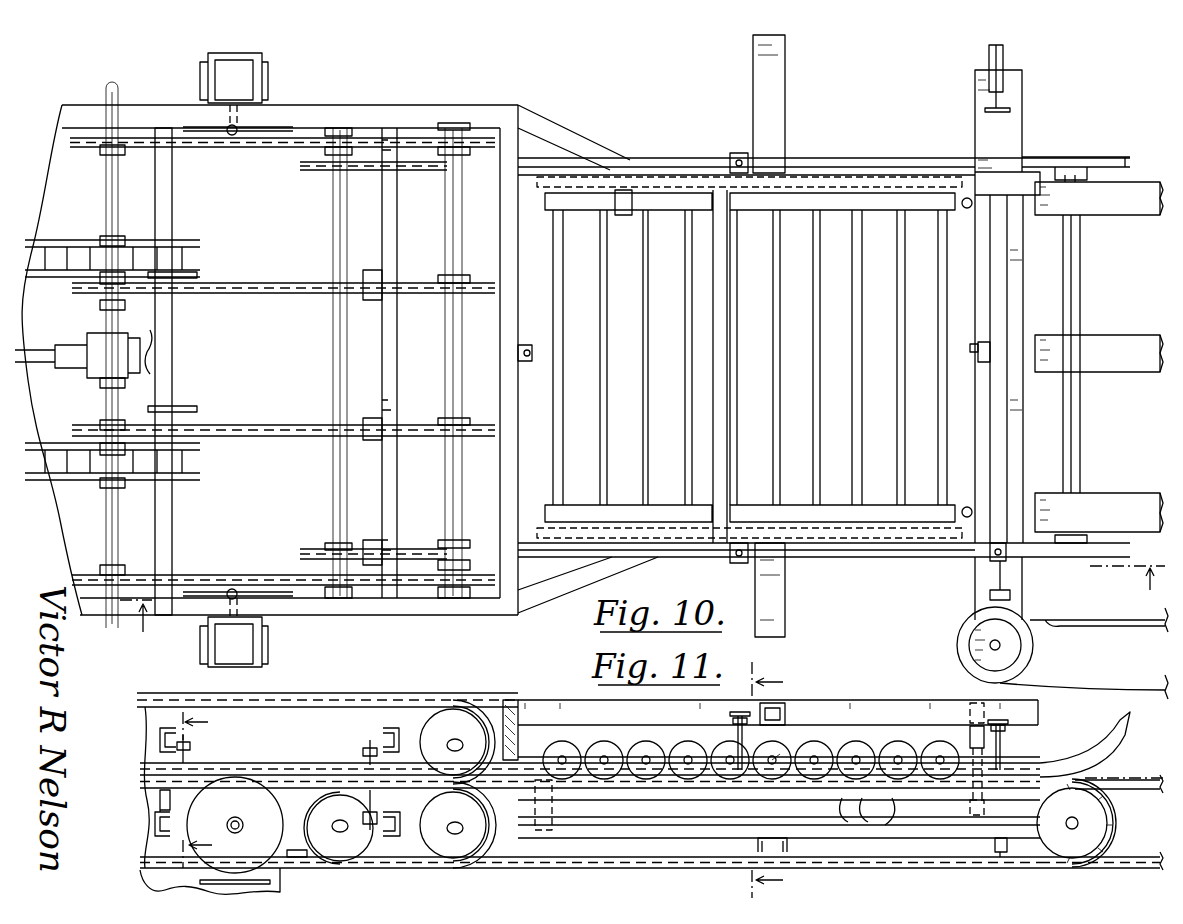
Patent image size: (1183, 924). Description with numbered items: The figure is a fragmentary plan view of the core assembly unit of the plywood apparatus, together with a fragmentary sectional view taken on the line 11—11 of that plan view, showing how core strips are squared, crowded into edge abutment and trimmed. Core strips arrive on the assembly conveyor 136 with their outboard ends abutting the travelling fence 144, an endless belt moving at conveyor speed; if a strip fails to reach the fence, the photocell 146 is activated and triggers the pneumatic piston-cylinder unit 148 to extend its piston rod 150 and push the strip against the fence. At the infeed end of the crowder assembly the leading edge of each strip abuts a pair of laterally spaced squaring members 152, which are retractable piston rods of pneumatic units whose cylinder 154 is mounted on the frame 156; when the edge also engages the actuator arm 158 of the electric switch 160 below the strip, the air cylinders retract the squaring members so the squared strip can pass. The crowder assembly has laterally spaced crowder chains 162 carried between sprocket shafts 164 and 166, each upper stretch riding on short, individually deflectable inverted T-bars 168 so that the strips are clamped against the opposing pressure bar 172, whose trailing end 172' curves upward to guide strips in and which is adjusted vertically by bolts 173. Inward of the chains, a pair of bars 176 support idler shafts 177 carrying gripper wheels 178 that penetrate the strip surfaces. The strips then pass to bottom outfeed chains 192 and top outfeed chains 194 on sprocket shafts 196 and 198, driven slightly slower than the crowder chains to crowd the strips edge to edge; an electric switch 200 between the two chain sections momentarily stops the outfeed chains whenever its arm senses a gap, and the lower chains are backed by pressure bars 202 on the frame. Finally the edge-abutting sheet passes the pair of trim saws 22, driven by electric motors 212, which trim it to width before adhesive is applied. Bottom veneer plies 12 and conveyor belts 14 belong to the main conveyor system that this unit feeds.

In FIG. 10, the section line 11— 11 is at (642, 611).
In FIG. 11, the bottom veneer plies 12 is at (786, 780).
In FIG. 11, the belts 14 is at (215, 789).
In FIG. 10, the trim saws 22 is at (283, 128).
In FIG. 11, the trim saws 22 is at (236, 782).
In FIG. 10, the assembly conveyor 136 is at (1118, 222).
In FIG. 11, the assembly conveyor 136 is at (1128, 857).
In FIG. 10, the travelling fence 144 is at (1100, 621).
In FIG. 10, the photocell 146 is at (1010, 597).
In FIG. 10, the pneumatic piston-cylinder unit 148 is at (1005, 58).
In FIG. 10, the piston rod 150 is at (1010, 100).
In FIG. 11, the squaring members 152 is at (1002, 760).
In FIG. 10, the cylinder 154 is at (966, 208).
In FIG. 11, the cylinder 154 is at (968, 738).
In FIG. 10, the frame 156 is at (1020, 180).
In FIG. 11, the frame 156 is at (1040, 710).
In FIG. 10, the actuator arm 158 is at (972, 346).
In FIG. 10, the electric switch 160 is at (980, 360).
In FIG. 11, the electric switch 160 is at (975, 808).
In FIG. 10, the crowder chains 162 is at (418, 172).
In FIG. 11, the crowder chains 162 is at (1010, 868).
In FIG. 10, the sprocket shaft 164 is at (1080, 400).
In FIG. 11, the sprocket shaft 164 is at (1076, 823).
In FIG. 10, the sprocket shaft 166 is at (333, 356).
In FIG. 11, the sprocket shaft 166 is at (332, 826).
In FIG. 11, the inverted T-bars 168 is at (867, 820).
In FIG. 10, the pressure bar 172 is at (824, 336).
In FIG. 11, the pressure bar 172 is at (779, 770).
In FIG. 10, the trailing end of pressure bar 172' is at (1088, 333).
In FIG. 11, the trailing end of pressure bar 172' is at (1102, 745).
In FIG. 11, the bolts 173 is at (736, 738).
In FIG. 10, the bars 176 is at (878, 206).
In FIG. 10, the idler shafts 177 is at (606, 340).
In FIG. 11, the idler shafts 177 is at (778, 760).
In FIG. 10, the gripper wheel 178 is at (937, 178).
In FIG. 11, the gripper wheel 178 is at (607, 748).
In FIG. 11, the bottom outfeed chains 192 is at (398, 868).
In FIG. 11, the top outfeed chains 194 is at (414, 700).
In FIG. 11, the sprocket shaft 196 is at (470, 823).
In FIG. 10, the sprocket shaft 198 is at (170, 512).
In FIG. 11, the sprocket shaft 198 is at (470, 740).
In FIG. 10, the electric switch 200 is at (527, 347).
In FIG. 11, the electric switch 200 is at (552, 830).
In FIG. 11, the pressure bars 202 is at (160, 800).
In FIG. 10, the electric motors 212 is at (262, 60).